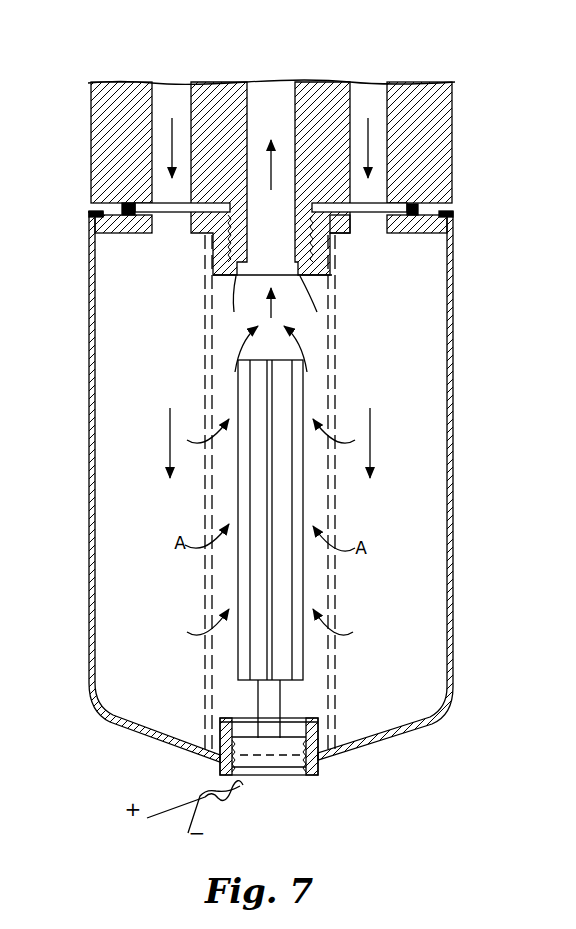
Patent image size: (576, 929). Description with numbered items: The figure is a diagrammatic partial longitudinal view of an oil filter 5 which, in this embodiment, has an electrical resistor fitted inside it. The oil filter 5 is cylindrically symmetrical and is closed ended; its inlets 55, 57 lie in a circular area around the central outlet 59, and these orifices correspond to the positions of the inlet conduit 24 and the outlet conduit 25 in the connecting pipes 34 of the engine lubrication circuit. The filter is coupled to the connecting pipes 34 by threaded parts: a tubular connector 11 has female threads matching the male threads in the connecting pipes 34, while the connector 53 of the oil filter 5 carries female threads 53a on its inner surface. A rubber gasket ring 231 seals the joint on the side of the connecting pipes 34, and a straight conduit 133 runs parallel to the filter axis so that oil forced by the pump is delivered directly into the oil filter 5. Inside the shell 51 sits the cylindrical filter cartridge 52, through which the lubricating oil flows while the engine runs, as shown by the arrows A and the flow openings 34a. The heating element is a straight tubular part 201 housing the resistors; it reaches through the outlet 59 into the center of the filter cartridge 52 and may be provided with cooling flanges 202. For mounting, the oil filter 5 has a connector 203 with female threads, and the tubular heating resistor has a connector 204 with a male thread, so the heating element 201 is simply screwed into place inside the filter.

The oil filter 5 is at (456, 502).
The first tubular connector 11 is at (333, 200).
The inlet conduit 24 is at (172, 97).
The outlet conduit 25 is at (272, 90).
The connecting pipes 34 is at (127, 104).
The flow openings 34a is at (276, 347).
The shell 51 is at (453, 575).
The filter cartridge 52 is at (333, 670).
The connector 53 is at (214, 270).
The female threads 53a is at (233, 272).
The inlet 55 is at (163, 241).
The inlet 57 is at (375, 241).
The outlet 59 is at (283, 246).
The conduit 133 is at (372, 206).
The rubber gasket ring 231 is at (125, 206).
The tubular part 201 is at (288, 483).
The cooling flanges 202 is at (243, 585).
The connector 203 is at (318, 749).
The connector 204 is at (270, 746).